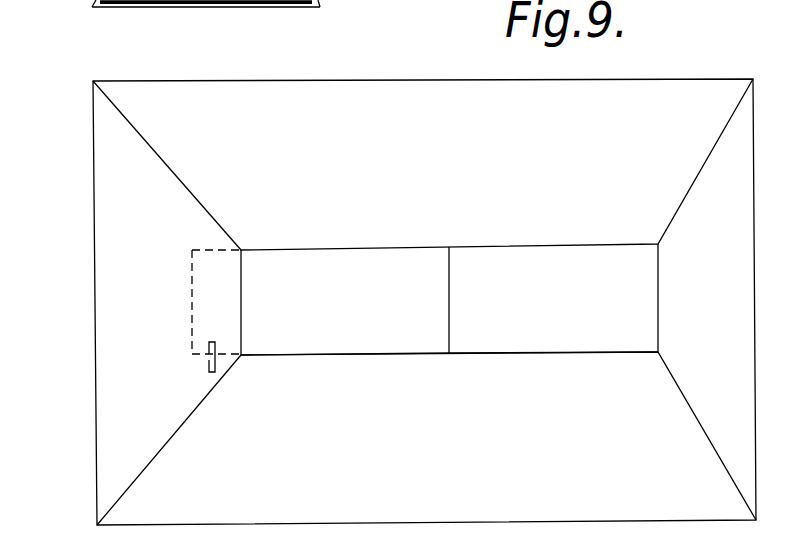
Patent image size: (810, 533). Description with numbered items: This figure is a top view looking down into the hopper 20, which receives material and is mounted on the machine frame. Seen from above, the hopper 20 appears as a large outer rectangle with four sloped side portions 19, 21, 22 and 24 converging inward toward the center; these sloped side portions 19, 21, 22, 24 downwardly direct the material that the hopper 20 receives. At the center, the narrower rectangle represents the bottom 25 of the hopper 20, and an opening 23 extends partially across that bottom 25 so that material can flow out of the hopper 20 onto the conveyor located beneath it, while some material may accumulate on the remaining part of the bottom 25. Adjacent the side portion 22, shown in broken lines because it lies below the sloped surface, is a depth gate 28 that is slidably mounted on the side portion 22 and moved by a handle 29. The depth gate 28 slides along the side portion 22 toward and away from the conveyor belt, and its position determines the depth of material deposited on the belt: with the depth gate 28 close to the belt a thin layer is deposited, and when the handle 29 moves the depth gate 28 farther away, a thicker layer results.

The sloped side portion 19 is at (406, 181).
The hopper 20 is at (323, 78).
The sloped side portion 21 is at (450, 460).
The sloped side portion 22 is at (103, 319).
The opening 23 is at (305, 320).
The sloped side portion 24 is at (685, 320).
The bottom 25 is at (505, 320).
The depth gate 28 is at (192, 250).
The handle 29 is at (207, 370).